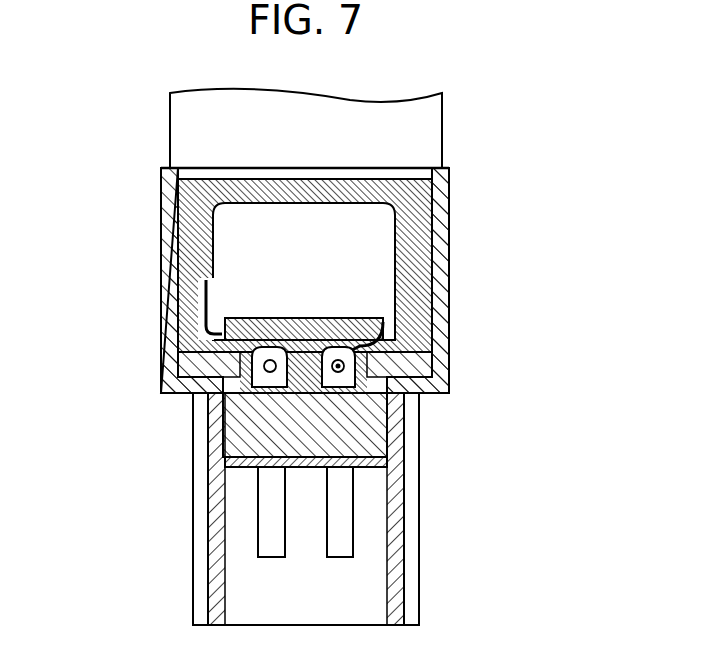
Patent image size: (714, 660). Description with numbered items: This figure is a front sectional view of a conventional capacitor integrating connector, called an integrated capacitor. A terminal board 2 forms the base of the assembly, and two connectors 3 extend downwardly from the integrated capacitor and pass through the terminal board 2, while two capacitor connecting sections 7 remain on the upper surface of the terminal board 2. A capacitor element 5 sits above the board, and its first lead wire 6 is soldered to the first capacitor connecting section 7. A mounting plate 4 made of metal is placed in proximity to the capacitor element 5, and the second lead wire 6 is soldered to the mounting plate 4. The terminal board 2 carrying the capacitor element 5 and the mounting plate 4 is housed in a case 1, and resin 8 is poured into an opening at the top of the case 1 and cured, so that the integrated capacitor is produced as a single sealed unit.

The case 1 is at (163, 358).
The terminal board 2 is at (260, 420).
The connectors 3 is at (337, 517).
The mounting plate 4 is at (210, 127).
The capacitor element 5 is at (240, 238).
The lead wire 6 is at (212, 305).
The capacitor connecting section 7 is at (187, 266).
The resin 8 is at (432, 180).